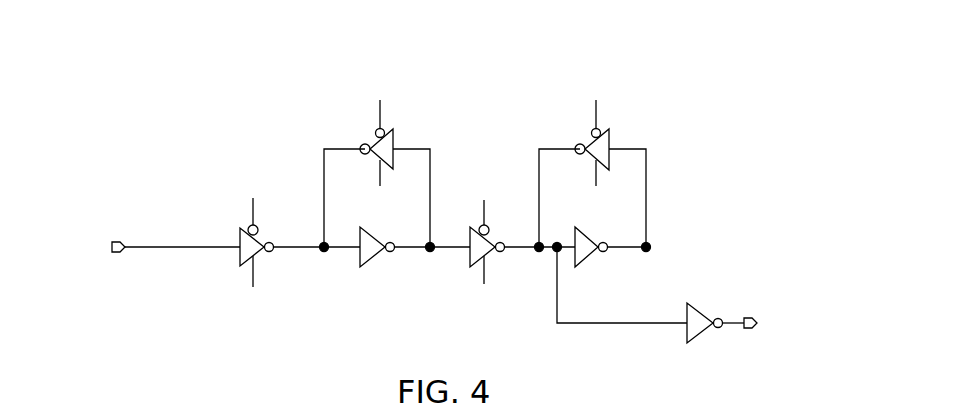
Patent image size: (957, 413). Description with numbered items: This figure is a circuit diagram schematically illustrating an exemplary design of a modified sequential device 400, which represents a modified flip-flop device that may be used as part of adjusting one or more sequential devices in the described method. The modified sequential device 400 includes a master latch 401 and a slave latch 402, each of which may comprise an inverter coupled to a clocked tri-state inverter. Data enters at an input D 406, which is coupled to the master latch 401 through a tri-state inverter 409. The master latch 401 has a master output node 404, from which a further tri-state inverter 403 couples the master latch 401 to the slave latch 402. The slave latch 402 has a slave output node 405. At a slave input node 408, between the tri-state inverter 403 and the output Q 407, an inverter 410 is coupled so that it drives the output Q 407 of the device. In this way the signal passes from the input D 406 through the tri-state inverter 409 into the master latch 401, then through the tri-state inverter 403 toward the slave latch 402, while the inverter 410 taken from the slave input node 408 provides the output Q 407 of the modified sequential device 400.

The modified sequential device 400 is at (740, 95).
The master latch 401 is at (324, 118).
The slave latch 402 is at (632, 100).
The tri-state inverter 403 is at (486, 137).
The master output node 404 is at (418, 262).
The slave output node 405 is at (660, 240).
The input D 406 is at (95, 225).
The output Q 407 is at (778, 302).
The slave input node 408 is at (550, 262).
The tri-state inverter 409 is at (235, 278).
The inverter 410 is at (682, 356).